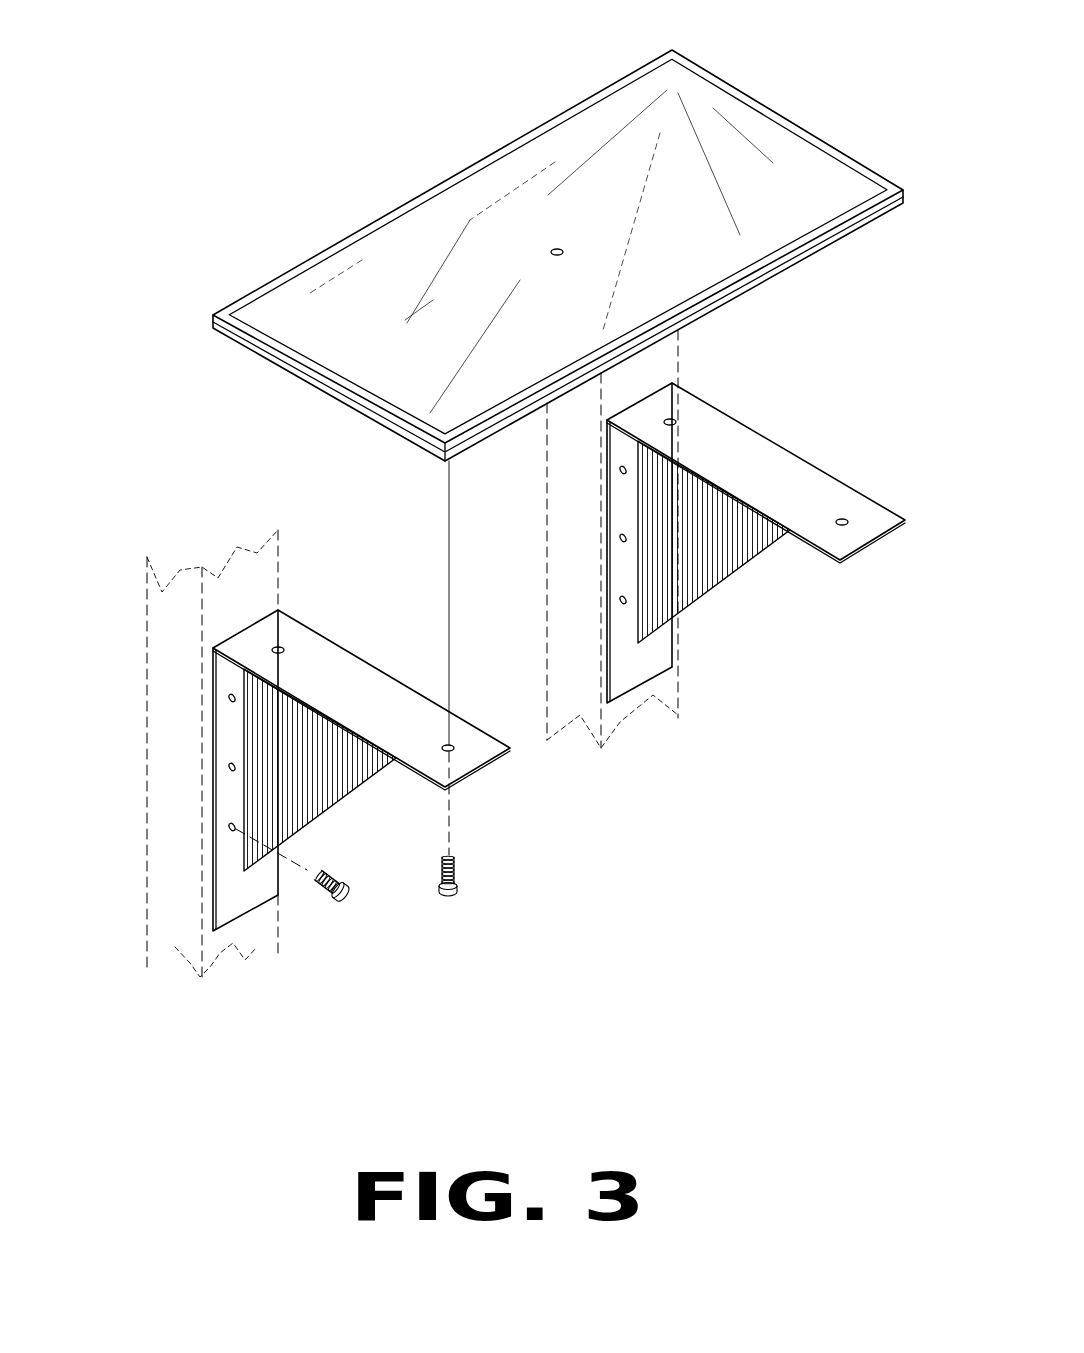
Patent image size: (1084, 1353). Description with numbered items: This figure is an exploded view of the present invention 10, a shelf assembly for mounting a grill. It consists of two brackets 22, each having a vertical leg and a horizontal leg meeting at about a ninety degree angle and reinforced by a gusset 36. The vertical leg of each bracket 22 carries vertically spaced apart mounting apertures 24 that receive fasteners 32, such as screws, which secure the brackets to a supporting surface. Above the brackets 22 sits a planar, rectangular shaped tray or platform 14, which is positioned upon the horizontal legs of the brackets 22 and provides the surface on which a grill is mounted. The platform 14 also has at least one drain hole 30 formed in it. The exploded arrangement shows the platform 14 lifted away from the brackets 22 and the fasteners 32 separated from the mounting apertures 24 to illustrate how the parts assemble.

The present invention 10 is at (845, 400).
The platform 14 is at (327, 248).
The bracket 22 is at (830, 562).
The mounting apertures 24 is at (232, 699).
The drain hole 30 is at (557, 248).
The fasteners 32 is at (460, 884).
The gusset 36 is at (687, 611).